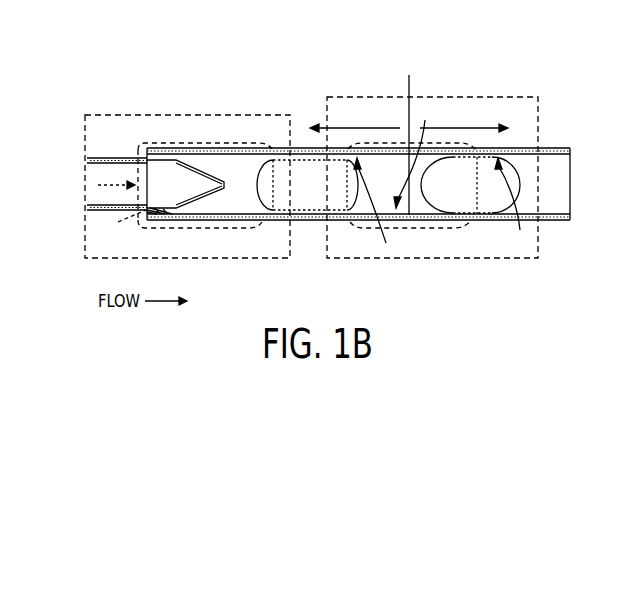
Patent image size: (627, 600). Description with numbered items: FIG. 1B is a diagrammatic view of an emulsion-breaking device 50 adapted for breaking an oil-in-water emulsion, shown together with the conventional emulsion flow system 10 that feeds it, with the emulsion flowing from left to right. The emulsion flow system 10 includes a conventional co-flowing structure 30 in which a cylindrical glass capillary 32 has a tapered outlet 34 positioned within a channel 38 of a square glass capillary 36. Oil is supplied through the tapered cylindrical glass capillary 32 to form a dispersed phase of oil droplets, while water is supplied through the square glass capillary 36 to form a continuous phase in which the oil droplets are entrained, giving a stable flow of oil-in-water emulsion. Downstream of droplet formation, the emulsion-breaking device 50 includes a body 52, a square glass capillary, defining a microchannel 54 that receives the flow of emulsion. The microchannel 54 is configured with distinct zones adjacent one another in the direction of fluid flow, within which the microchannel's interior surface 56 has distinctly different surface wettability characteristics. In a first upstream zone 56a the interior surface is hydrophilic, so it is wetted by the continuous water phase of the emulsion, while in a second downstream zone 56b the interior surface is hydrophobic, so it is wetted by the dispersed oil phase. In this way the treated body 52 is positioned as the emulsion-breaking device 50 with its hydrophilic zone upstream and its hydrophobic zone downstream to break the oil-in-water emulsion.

The emulsion flow system 10 is at (156, 112).
The cylindrical glass capillary 32 is at (100, 160).
The tapered outlet 34 is at (197, 168).
The square glass capillary 36 is at (299, 221).
The co-flowing structure 30 is at (203, 231).
The channel 38 is at (252, 193).
The microchannel 54 is at (385, 182).
The emulsion-breaking device 50 is at (528, 122).
The body 52 is at (493, 220).
The interior surface 56 is at (414, 155).
The first upstream zone 56a is at (375, 208).
The second downstream zone 56b is at (513, 203).